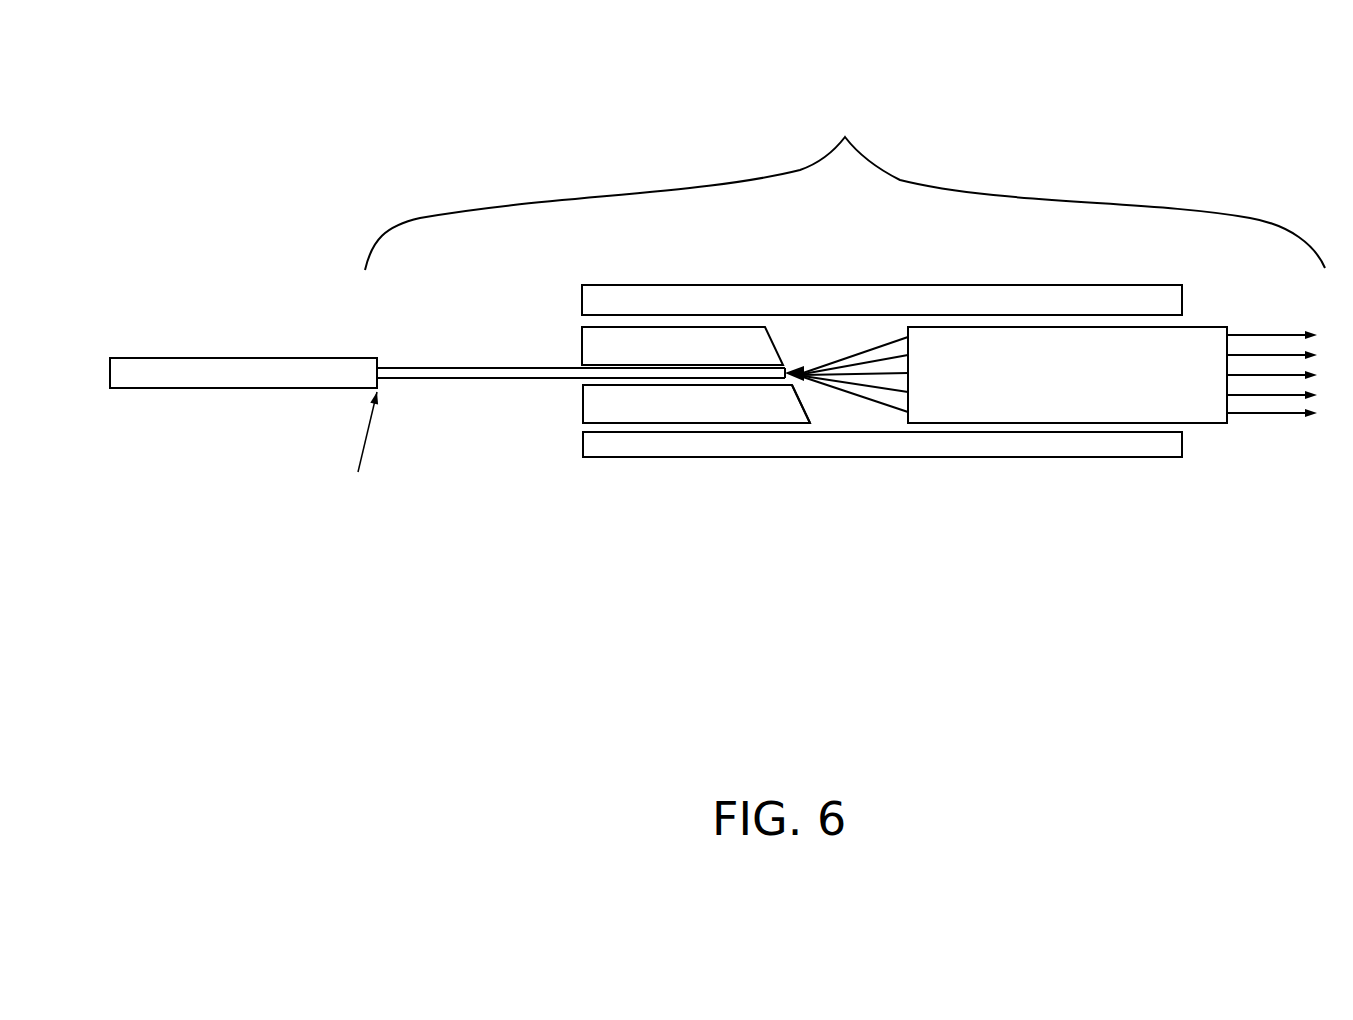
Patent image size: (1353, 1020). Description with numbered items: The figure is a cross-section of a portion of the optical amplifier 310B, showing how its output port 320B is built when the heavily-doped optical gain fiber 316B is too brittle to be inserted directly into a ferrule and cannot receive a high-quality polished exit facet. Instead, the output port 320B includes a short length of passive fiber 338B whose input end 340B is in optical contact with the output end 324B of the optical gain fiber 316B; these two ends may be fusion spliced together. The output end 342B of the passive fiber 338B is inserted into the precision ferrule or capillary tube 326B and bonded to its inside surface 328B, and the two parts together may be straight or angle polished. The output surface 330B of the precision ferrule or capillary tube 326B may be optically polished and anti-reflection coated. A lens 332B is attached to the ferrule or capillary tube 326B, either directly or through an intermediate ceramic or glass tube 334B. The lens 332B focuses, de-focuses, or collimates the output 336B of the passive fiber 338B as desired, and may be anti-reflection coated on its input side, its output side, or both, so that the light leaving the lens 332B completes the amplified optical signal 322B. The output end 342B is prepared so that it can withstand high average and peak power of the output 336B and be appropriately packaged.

The optical amplifier 310B is at (1060, 70).
The optical gain fiber 316B is at (228, 390).
The output port 320B is at (845, 186).
The amplified optical signal 322B is at (1290, 418).
The output end of the optical gain fiber 324B is at (377, 358).
The precision ferrule or capillary tube 326B is at (657, 345).
The inside surface of the ferrule or capillary tube 328B is at (668, 385).
The output surface of the precision ferrule or capillary tube 330B is at (815, 409).
The lens 332B is at (1073, 433).
The intermediate ceramic or glass tube 334B is at (575, 447).
The output of the passive fiber 336B is at (840, 342).
The passive fiber 338B is at (510, 382).
The input end of the passive fiber 340B is at (382, 380).
The output end of the passive fiber 342B is at (740, 365).